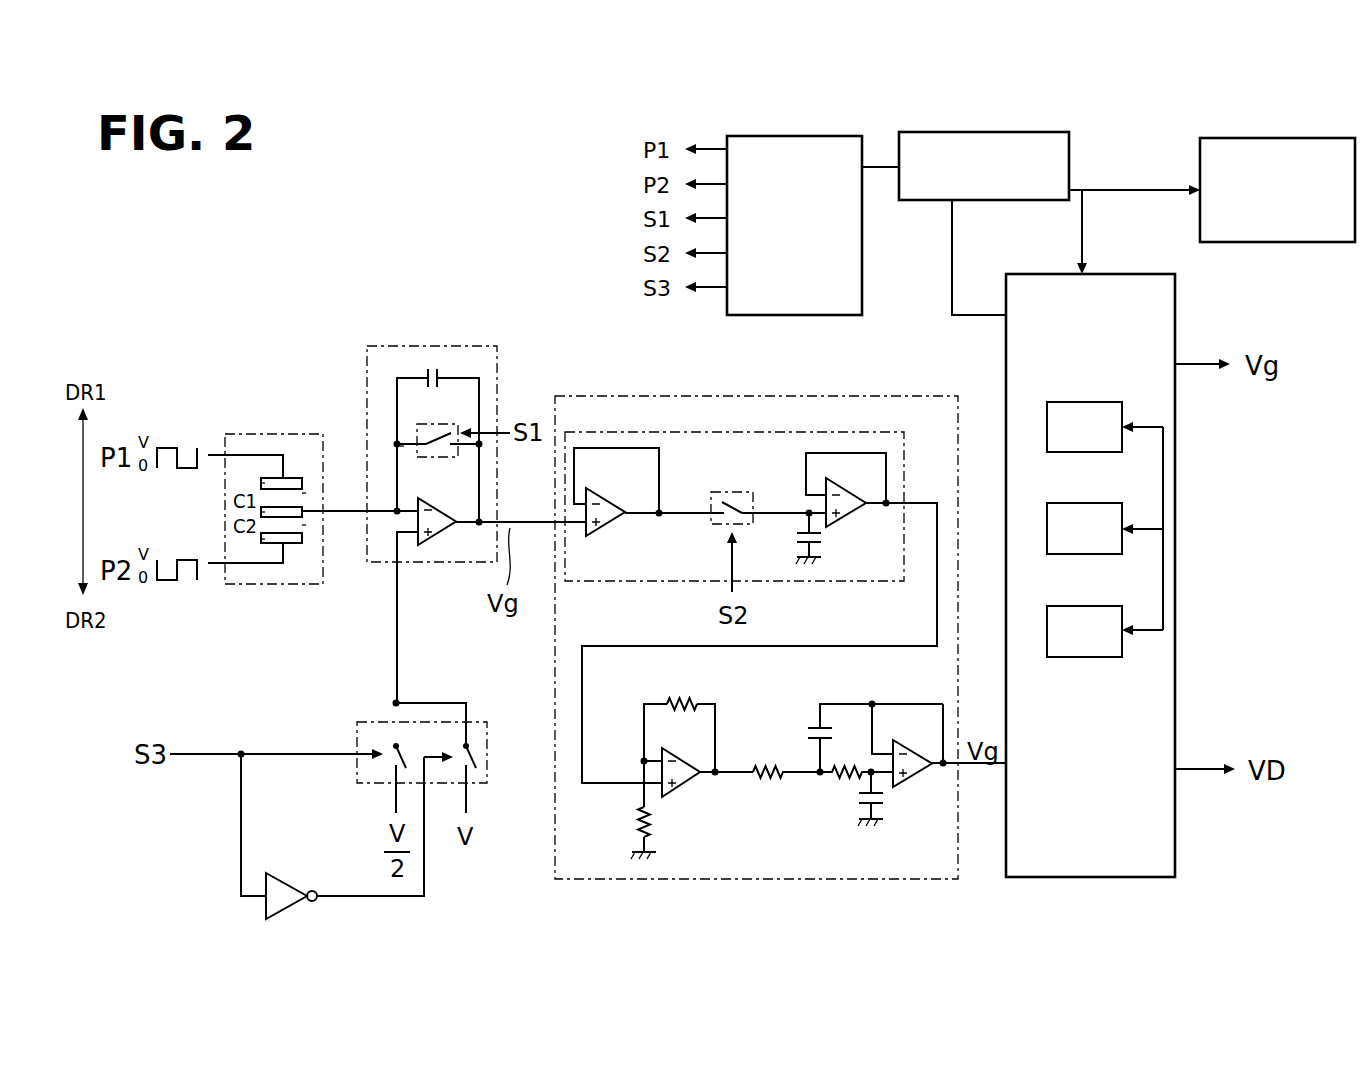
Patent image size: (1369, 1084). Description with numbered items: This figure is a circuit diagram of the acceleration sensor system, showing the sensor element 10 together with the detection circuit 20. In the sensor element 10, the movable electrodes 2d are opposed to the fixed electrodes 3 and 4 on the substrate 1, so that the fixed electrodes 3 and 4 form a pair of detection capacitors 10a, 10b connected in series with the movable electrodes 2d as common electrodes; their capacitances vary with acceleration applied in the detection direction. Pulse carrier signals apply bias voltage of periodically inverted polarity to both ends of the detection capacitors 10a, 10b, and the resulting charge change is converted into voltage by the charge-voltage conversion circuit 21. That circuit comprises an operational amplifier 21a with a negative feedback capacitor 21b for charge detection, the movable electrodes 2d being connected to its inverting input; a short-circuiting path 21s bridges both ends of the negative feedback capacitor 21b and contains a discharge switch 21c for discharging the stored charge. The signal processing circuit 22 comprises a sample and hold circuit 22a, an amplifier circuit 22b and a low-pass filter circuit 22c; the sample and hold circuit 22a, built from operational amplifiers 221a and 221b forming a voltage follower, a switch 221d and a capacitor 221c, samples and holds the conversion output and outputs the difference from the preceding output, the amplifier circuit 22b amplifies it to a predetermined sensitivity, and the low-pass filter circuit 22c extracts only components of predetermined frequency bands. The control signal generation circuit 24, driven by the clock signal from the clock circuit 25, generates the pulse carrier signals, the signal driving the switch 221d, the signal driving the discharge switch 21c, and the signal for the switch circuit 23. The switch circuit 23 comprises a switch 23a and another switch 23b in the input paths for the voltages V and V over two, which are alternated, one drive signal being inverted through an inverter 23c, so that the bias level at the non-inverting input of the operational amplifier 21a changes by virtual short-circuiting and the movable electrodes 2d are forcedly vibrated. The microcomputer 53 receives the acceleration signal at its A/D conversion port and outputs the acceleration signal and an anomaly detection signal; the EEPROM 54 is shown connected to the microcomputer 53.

The substrate 1 is at (268, 433).
The movable electrodes 2d is at (261, 512).
The fixed electrode 3 is at (261, 484).
The fixed electrode 4 is at (261, 539).
The sensor element 10 is at (296, 464).
The detection capacitor 10a is at (313, 490).
The detection capacitor 10b is at (315, 535).
The detection circuit 20 is at (392, 210).
The charge-voltage conversion circuit 21 is at (462, 345).
The operational amplifier 21a is at (447, 512).
The negative feedback capacitor 21b is at (428, 367).
The discharge switch 21c is at (442, 438).
The short-circuiting path 21s is at (402, 447).
The signal processing circuit 22 is at (862, 395).
The sample and hold circuit 22a is at (812, 431).
The amplifier circuit 22b is at (692, 796).
The low-pass filter circuit 22c is at (920, 792).
The operational amplifier 221a is at (866, 528).
The operational amplifier 221b is at (616, 540).
The capacitor 221c is at (790, 545).
The switch 221d is at (732, 512).
The switch circuit 23 is at (378, 786).
The switch 23a is at (420, 740).
The switch 23b is at (490, 740).
The inverter 23c is at (283, 915).
The control signal generation circuit 24 is at (796, 135).
The clock circuit 25 is at (953, 131).
The microcomputer 53 is at (1116, 273).
The EEPROM 54 is at (1226, 137).